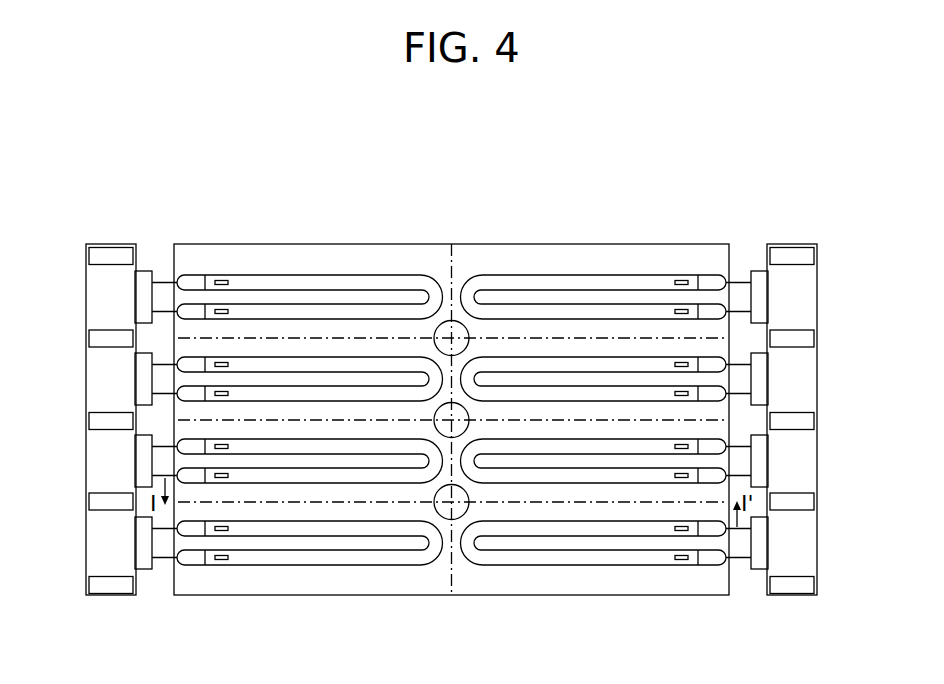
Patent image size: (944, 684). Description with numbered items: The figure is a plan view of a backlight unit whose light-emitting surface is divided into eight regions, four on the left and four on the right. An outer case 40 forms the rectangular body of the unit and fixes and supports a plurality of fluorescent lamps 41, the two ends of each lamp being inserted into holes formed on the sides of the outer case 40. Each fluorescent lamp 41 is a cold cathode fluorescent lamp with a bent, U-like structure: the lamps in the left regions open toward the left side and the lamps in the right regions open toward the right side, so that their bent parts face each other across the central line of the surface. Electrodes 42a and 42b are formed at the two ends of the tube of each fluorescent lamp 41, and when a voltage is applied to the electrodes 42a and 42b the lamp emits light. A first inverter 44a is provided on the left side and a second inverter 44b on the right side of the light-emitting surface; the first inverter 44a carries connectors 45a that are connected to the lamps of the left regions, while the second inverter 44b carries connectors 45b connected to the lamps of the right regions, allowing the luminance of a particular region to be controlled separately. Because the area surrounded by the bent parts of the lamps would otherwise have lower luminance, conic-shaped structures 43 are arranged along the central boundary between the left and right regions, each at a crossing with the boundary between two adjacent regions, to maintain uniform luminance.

The outer case 40 is at (429, 244).
The fluorescent lamp 41 is at (373, 276).
The electrode 42a is at (221, 280).
The electrode 42b is at (228, 311).
The conic-shaped structure 43 is at (443, 512).
The first inverter 44a is at (96, 387).
The second inverter 44b is at (805, 387).
The connector 45a is at (142, 299).
The connector 45b is at (762, 299).